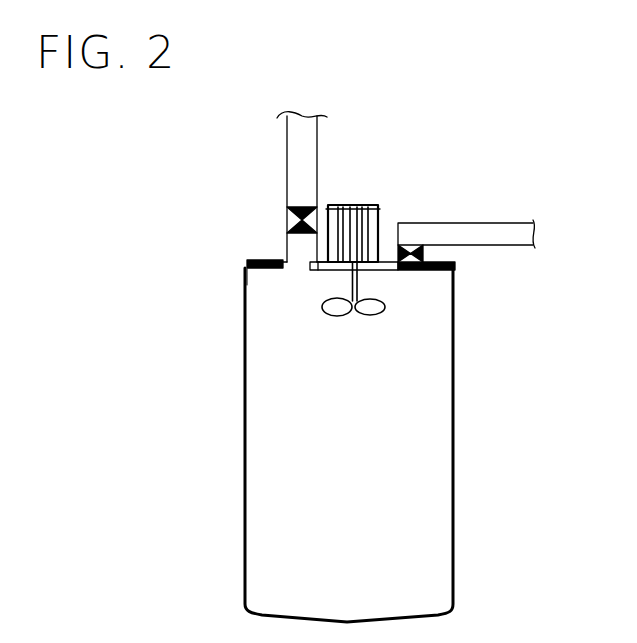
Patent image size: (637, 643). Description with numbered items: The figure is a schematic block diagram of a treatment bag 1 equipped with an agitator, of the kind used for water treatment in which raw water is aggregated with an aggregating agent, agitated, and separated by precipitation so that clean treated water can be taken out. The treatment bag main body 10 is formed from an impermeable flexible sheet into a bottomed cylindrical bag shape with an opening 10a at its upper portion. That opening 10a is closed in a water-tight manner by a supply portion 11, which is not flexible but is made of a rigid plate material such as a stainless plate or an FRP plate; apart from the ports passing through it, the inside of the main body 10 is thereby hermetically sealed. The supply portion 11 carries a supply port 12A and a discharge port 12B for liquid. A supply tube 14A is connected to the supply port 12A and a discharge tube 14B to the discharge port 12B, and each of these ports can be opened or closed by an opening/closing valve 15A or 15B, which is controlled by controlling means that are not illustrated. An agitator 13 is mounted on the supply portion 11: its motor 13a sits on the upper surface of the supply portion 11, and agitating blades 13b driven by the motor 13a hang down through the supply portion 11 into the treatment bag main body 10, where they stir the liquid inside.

The treatment bag 1 is at (509, 389).
The treatment bag main body 10 is at (454, 475).
The opening 10a is at (247, 285).
The supply portion 11 is at (257, 263).
The supply port 12A is at (290, 263).
The discharge port 12B is at (410, 270).
The agitator 13 is at (389, 197).
The motor 13a is at (380, 223).
The agitating blades 13b is at (322, 303).
The supply tube 14A is at (286, 138).
The discharge tube 14B is at (493, 249).
The opening/closing valve 15A is at (286, 222).
The opening/closing valve 15B is at (413, 247).